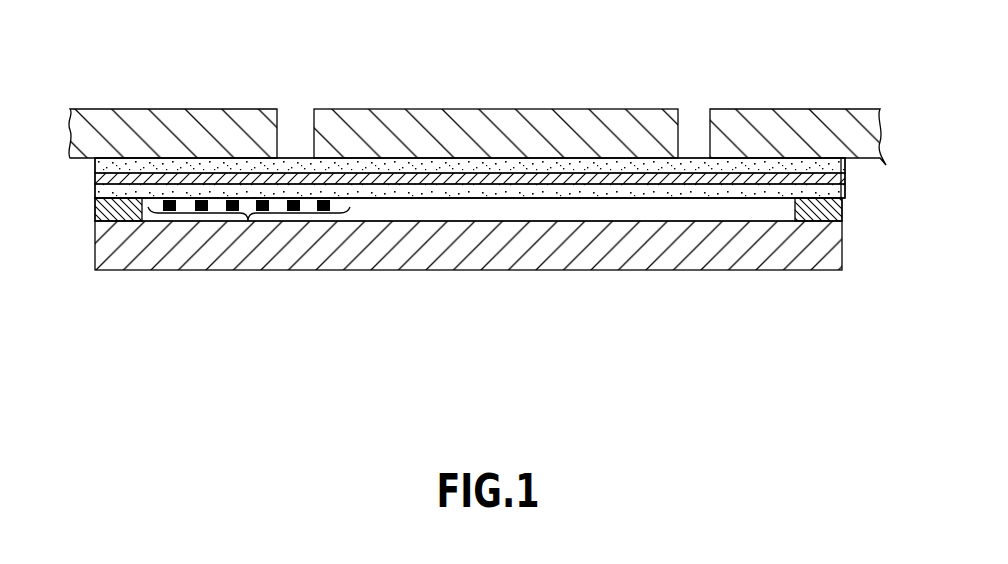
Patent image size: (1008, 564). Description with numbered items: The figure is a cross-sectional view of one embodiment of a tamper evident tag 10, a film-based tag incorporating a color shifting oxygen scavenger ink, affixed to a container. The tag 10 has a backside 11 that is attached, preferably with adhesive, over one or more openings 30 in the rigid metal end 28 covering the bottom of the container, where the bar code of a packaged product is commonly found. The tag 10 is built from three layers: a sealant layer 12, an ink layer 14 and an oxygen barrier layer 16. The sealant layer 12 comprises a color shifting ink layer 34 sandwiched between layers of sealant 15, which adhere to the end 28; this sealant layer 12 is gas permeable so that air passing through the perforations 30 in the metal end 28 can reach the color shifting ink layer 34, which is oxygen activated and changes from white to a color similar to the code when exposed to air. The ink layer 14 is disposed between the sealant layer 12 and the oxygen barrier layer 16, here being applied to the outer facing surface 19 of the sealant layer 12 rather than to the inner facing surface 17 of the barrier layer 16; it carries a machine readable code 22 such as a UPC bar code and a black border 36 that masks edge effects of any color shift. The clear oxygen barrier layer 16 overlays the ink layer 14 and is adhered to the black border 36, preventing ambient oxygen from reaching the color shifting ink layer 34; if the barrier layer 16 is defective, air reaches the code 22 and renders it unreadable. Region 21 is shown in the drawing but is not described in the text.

The tamper evident tag 10 is at (147, 292).
The backside 11 is at (115, 158).
The sealant layer 12 is at (846, 178).
The ink layer 14 is at (845, 209).
The sealant 15 is at (95, 166).
The oxygen barrier layer 16 is at (845, 254).
The inner facing surface 17 is at (467, 222).
The outer facing surface 19 is at (598, 199).
The cover portion 21 is at (538, 84).
The machine readable code 22 is at (248, 221).
The metal end 28 is at (796, 110).
The openings 30 is at (296, 128).
The color shifting ink layer 34 is at (95, 179).
The black border 36 is at (95, 210).